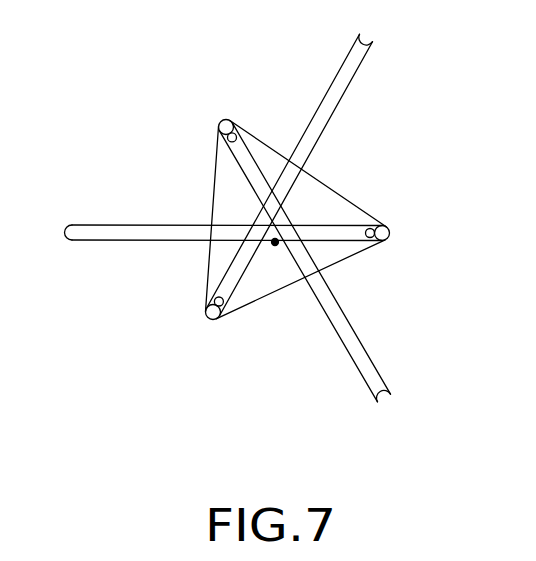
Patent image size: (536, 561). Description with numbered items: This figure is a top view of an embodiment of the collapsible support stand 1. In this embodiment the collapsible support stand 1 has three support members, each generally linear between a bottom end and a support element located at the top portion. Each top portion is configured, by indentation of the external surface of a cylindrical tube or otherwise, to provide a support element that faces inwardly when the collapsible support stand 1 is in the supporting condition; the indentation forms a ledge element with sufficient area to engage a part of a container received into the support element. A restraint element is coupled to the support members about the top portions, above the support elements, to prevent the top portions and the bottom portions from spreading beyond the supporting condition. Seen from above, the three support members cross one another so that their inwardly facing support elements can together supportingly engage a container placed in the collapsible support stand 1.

The collapsible support stand 1 is at (113, 68).